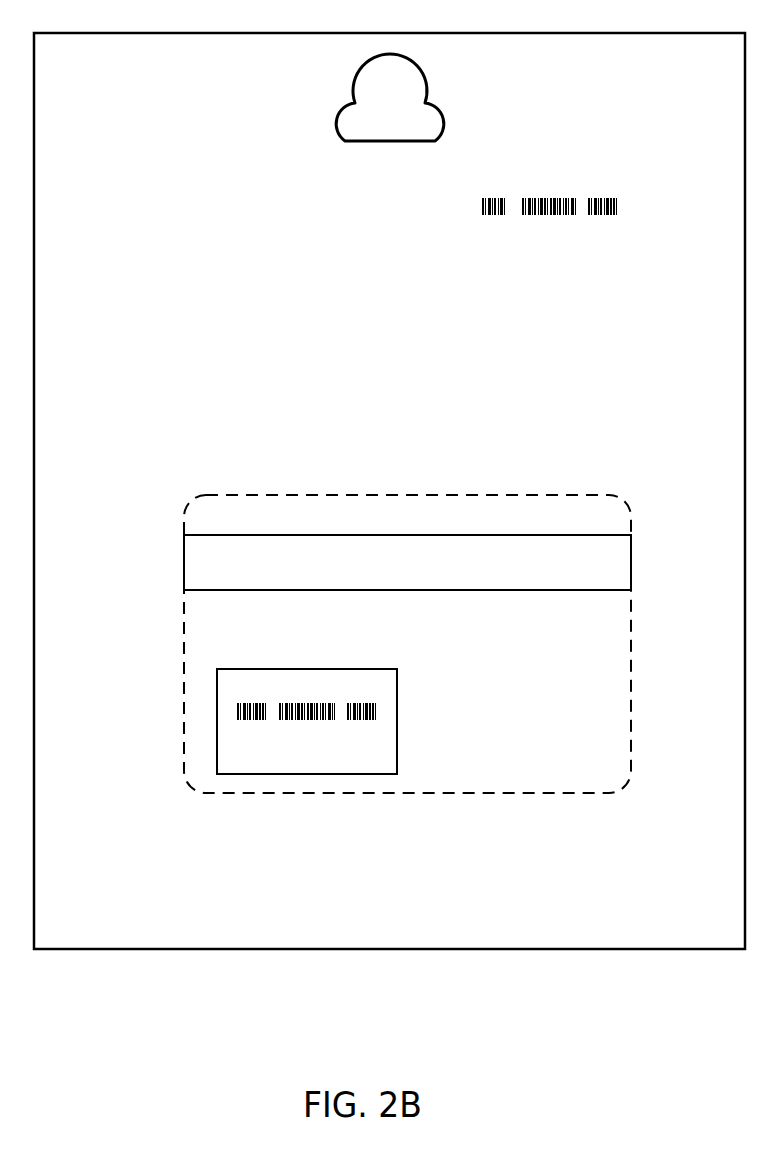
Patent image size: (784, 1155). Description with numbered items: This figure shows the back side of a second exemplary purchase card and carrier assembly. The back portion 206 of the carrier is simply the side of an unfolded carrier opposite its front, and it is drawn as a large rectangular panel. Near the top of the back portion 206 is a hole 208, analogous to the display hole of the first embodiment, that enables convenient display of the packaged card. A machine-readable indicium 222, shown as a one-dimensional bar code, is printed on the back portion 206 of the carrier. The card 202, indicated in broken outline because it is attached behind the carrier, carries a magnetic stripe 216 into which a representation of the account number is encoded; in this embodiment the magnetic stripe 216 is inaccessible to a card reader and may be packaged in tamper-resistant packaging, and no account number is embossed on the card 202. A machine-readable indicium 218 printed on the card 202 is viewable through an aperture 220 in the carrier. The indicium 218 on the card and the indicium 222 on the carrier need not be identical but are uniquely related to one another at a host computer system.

The card 202 is at (623, 780).
The back portion 206 is at (110, 80).
The hole 208 is at (453, 119).
The magnetic stripe 216 is at (184, 568).
The machine-readable indicium 218 is at (367, 721).
The aperture 220 is at (285, 774).
The machine-readable indicium 222 is at (482, 206).